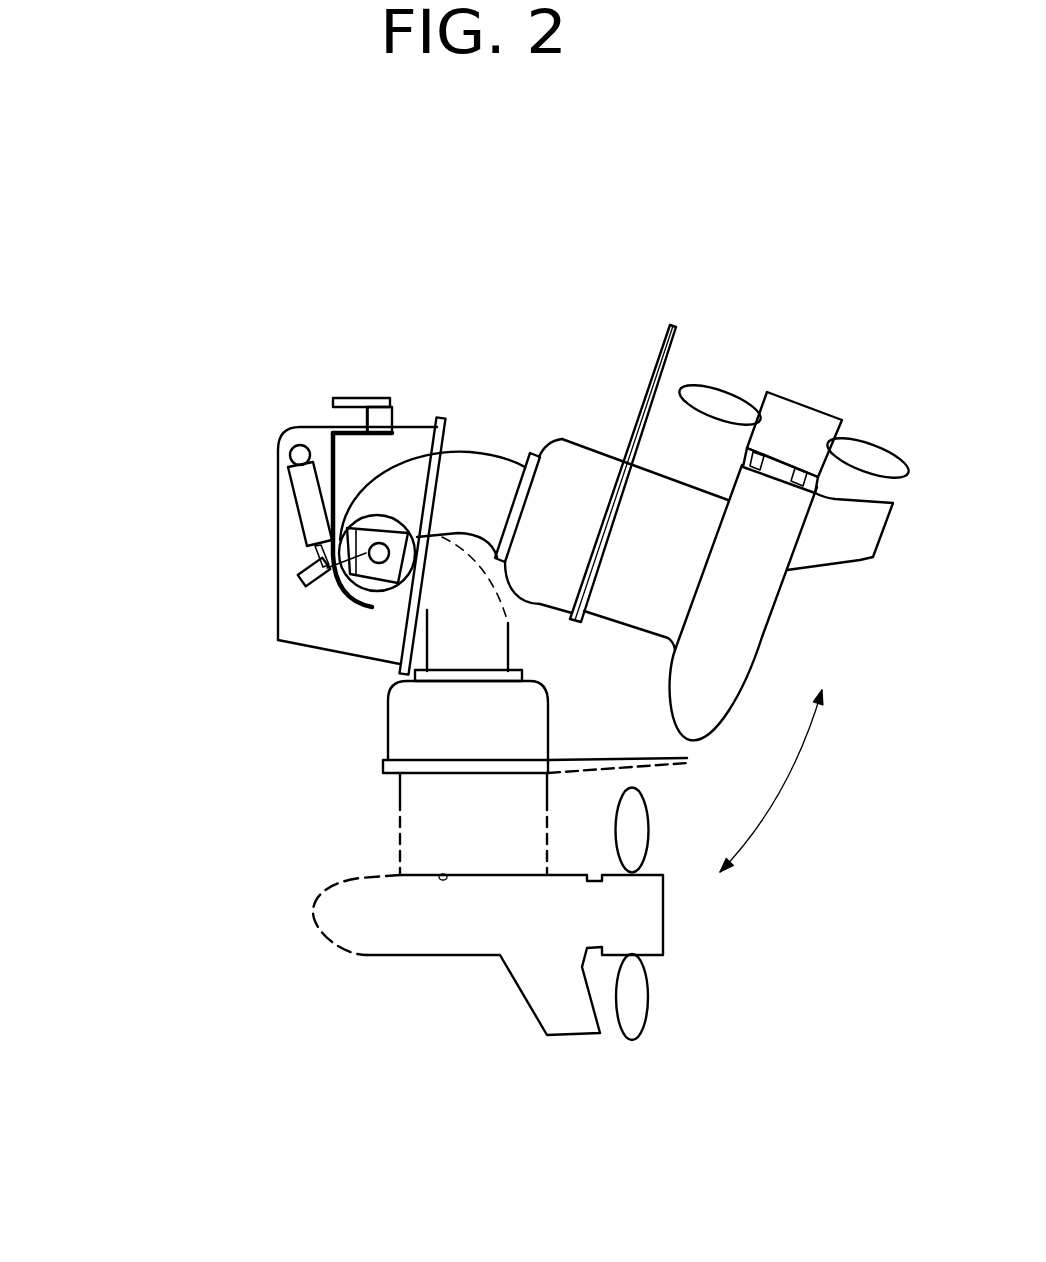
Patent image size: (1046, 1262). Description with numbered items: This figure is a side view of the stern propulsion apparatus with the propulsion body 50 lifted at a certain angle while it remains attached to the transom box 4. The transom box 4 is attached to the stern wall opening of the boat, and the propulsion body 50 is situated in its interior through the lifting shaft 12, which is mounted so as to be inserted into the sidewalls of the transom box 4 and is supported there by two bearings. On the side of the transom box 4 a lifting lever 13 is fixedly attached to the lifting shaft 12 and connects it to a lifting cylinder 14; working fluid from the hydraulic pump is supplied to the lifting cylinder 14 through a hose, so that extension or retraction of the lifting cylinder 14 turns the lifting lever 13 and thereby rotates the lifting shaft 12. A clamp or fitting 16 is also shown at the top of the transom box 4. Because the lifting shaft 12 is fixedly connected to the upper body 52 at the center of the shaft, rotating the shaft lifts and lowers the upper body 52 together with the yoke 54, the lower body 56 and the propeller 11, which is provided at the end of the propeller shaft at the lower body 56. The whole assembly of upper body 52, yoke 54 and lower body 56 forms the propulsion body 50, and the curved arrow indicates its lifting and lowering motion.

The transom box 4 is at (285, 430).
The propeller 11 is at (722, 390).
The lifting shaft 12 is at (392, 514).
The lifting lever 13 is at (303, 570).
The lifting cylinder 14 is at (300, 503).
The clamp 16 is at (353, 398).
The propulsion body 50 is at (135, 742).
The upper body 52 is at (405, 617).
The yoke 54 is at (388, 733).
The lower body 56 is at (310, 920).